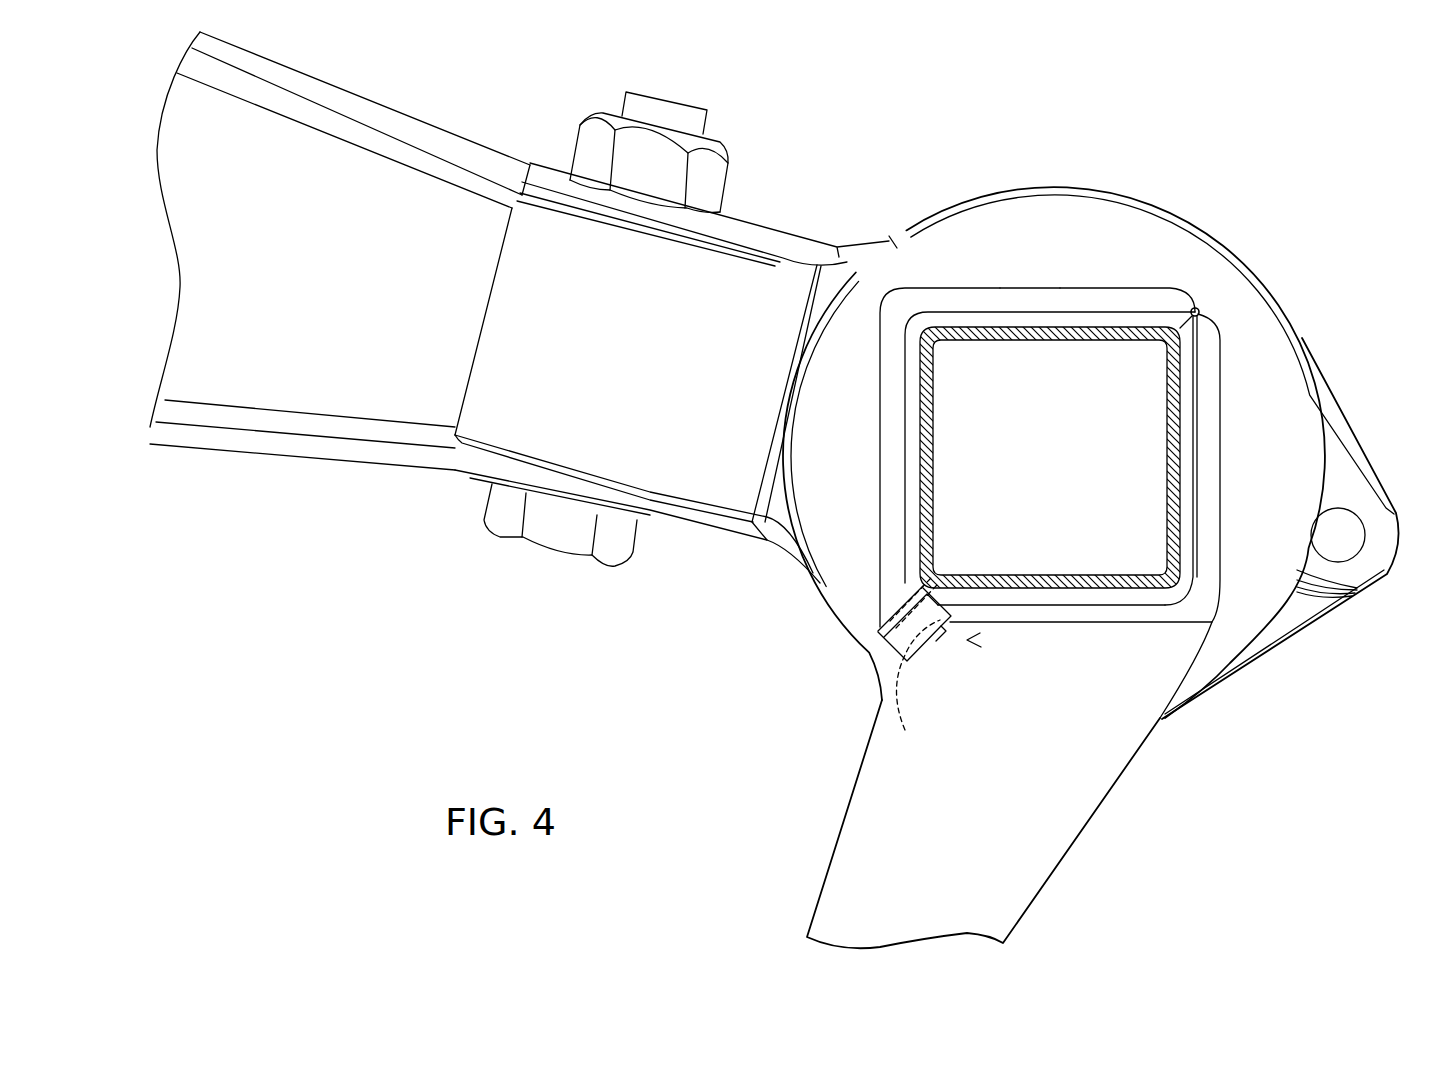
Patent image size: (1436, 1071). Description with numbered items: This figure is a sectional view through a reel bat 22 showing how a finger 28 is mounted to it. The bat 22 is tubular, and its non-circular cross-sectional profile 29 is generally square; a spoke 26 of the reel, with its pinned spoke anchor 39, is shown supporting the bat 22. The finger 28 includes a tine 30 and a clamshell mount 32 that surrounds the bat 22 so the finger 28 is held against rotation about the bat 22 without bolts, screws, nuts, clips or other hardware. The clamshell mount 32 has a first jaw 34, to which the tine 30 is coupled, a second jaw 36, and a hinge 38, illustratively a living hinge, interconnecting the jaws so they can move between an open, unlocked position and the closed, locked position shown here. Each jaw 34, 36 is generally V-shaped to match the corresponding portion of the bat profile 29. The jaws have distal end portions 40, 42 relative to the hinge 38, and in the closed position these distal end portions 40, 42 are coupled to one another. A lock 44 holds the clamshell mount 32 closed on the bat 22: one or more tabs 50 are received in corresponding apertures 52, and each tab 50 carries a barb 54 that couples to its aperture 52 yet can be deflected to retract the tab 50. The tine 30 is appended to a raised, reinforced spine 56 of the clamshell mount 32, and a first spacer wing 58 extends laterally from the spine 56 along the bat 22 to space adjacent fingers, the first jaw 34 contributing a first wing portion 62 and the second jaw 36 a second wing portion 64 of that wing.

The bat 22 is at (1017, 333).
The spoke 26 is at (448, 143).
The finger 28 is at (1172, 772).
The non-circular cross-sectional profile 29 is at (1180, 403).
The tine 30 is at (1013, 835).
The clamshell mount 32 is at (1058, 192).
The first jaw 34 is at (1208, 460).
The second jaw 36 is at (1013, 287).
The hinge 38 is at (1199, 309).
The spoke anchor 39 is at (1374, 552).
The distal end portion 40 is at (923, 657).
The distal end portion 42 is at (898, 593).
The lock 44 is at (970, 640).
The tab 50 is at (937, 583).
The aperture 52 is at (918, 694).
The barb 54 is at (943, 637).
The spine 56 is at (1055, 287).
The first spacer wing 58 is at (1092, 307).
The first wing portion 62 is at (1185, 528).
The second wing portion 64 is at (965, 320).